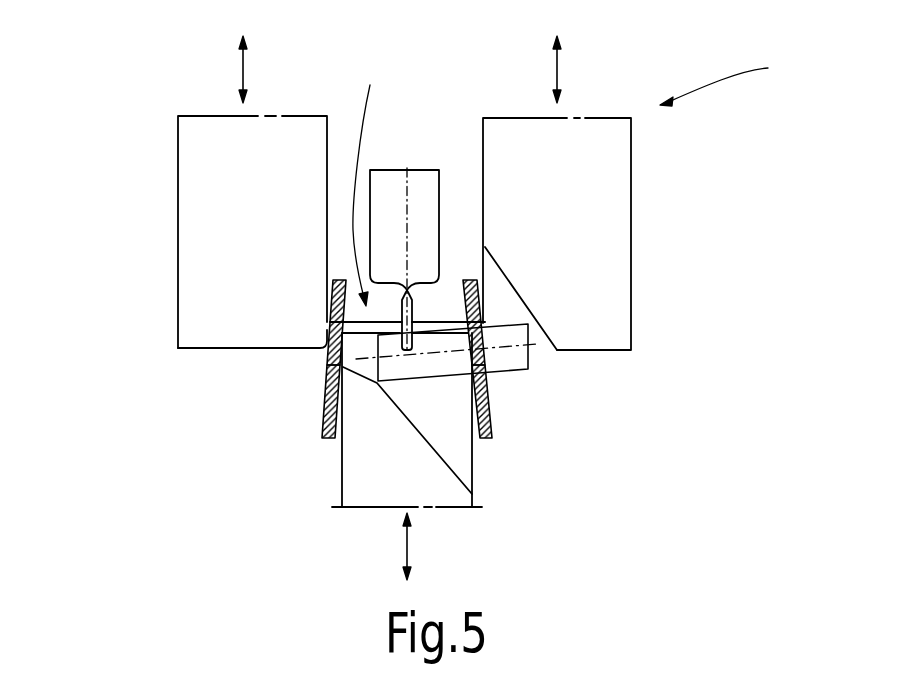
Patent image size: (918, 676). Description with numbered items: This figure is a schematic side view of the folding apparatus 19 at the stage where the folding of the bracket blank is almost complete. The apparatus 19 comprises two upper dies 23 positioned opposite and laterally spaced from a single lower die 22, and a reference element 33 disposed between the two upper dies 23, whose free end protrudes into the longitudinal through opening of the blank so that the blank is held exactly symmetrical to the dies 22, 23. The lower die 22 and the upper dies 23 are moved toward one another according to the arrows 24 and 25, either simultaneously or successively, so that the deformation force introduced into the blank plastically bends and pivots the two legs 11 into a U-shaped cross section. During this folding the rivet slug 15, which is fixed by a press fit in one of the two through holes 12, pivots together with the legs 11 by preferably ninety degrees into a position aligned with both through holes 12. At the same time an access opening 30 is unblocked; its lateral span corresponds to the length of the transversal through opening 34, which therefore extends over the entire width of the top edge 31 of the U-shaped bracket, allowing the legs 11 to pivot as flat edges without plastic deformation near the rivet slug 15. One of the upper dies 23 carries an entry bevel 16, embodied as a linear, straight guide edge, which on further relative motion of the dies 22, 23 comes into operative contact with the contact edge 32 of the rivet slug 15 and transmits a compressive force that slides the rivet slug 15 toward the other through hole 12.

The legs 11 is at (323, 422).
The through holes 12 is at (331, 362).
The rivet slug 15 is at (438, 360).
The entry bevel 16 is at (504, 272).
The apparatus 19 is at (726, 76).
The lower die 22 is at (381, 468).
The upper dies 23 is at (216, 186).
The arrows 24 is at (243, 68).
The arrows 25 is at (410, 545).
The access opening 30 is at (370, 180).
The top edge 31 is at (432, 324).
The contact edge 32 is at (529, 324).
The reference element 33 is at (415, 210).
The transversal through opening 34 is at (340, 322).